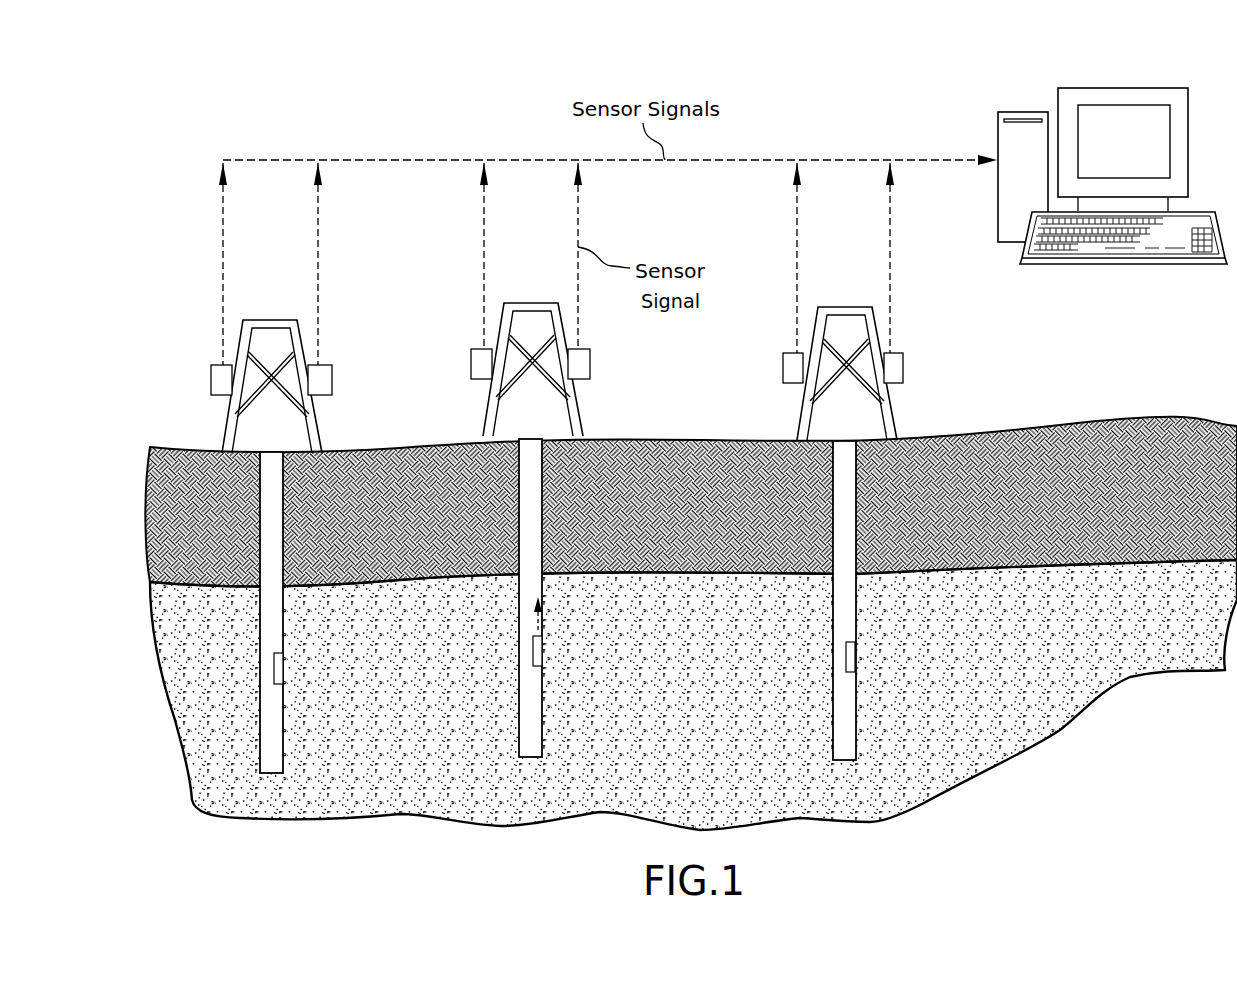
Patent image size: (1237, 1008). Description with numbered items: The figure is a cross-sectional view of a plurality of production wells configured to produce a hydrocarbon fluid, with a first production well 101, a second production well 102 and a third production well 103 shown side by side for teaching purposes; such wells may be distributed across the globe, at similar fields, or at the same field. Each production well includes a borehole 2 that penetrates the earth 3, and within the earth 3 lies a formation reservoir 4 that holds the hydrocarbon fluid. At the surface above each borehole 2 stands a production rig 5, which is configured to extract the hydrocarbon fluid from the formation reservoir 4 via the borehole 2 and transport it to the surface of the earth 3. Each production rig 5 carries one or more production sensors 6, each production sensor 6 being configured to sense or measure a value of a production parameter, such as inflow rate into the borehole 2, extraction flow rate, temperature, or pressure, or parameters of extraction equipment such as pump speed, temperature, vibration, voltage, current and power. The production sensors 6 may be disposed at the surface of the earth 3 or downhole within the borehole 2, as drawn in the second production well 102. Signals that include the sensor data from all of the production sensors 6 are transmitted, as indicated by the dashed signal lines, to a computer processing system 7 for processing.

The borehole 2 is at (519, 527).
The earth 3 is at (1117, 475).
The formation reservoir 4 is at (1184, 614).
The production rig 5 is at (486, 312).
The production sensor 6 is at (471, 366).
The computer processing system 7 is at (1024, 111).
The first production well 101 is at (315, 808).
The second production well 102 is at (467, 623).
The third production well 103 is at (888, 808).